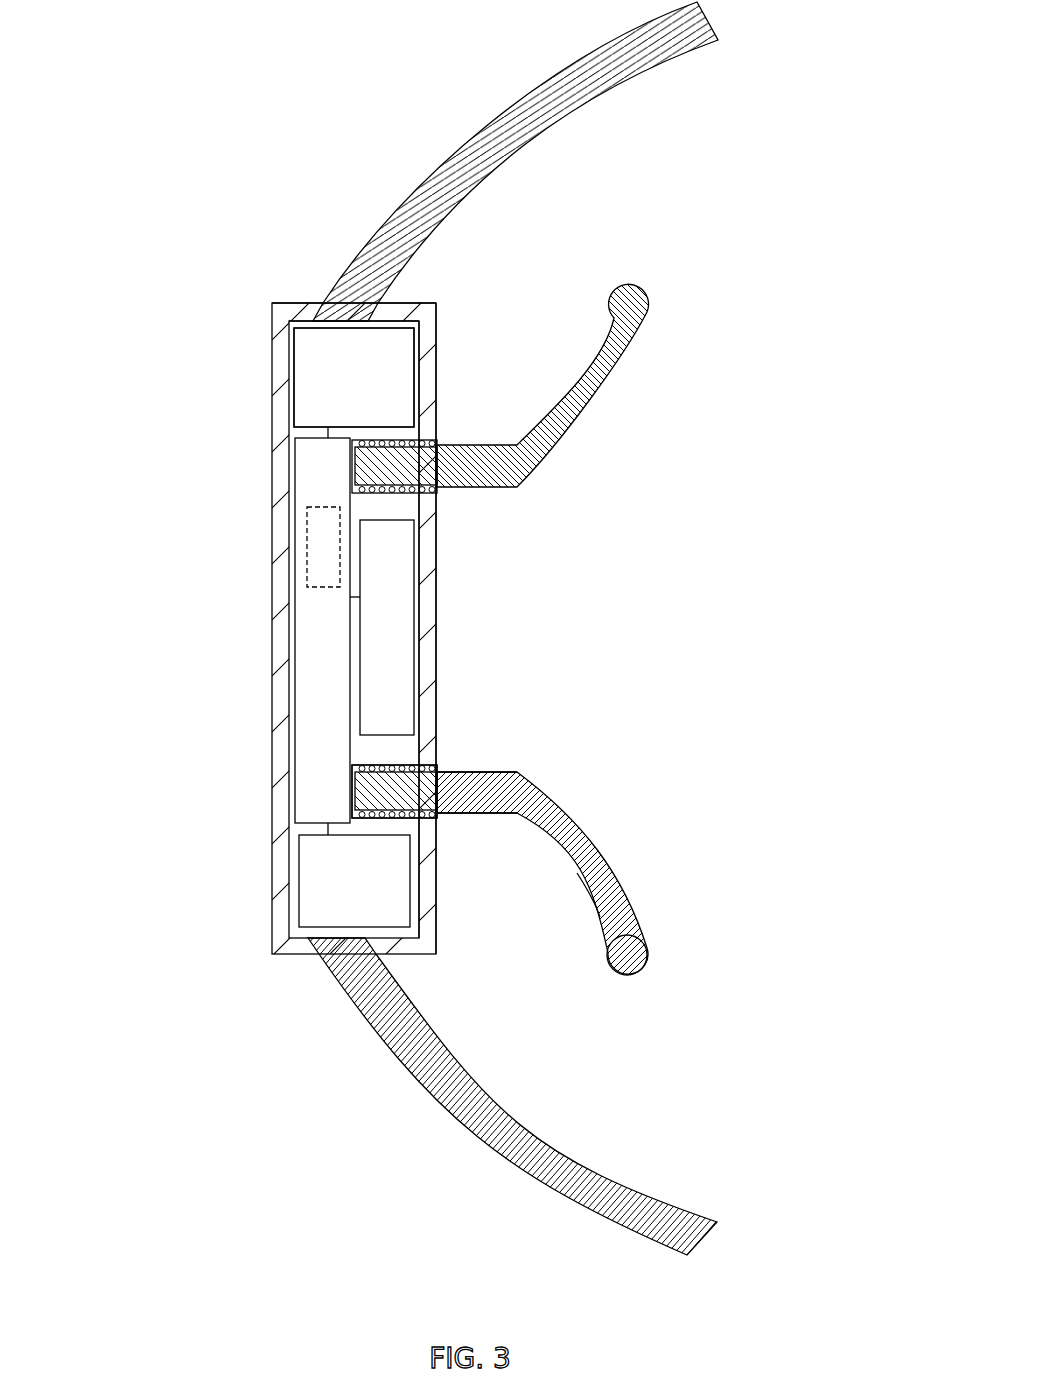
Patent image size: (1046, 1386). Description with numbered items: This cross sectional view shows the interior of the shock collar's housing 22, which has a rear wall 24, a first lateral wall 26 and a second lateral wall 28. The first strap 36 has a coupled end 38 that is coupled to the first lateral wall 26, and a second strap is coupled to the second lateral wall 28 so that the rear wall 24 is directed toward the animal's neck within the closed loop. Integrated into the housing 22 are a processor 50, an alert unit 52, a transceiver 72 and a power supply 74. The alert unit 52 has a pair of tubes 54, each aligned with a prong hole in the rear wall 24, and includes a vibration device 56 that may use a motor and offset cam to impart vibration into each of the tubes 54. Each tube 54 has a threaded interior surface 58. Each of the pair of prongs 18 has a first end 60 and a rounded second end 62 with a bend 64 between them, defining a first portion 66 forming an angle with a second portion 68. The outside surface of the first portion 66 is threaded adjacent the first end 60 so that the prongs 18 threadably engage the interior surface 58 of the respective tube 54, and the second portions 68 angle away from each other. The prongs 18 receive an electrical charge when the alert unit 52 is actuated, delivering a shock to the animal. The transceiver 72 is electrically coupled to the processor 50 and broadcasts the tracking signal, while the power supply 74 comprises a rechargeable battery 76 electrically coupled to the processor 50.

The prongs 18 is at (618, 447).
The housing 22 is at (238, 358).
The rear wall 24 is at (437, 360).
The first lateral wall 26 is at (292, 303).
The second lateral wall 28 is at (307, 955).
The first strap 36 is at (450, 142).
The coupled end 38 is at (343, 325).
The processor 50 is at (313, 398).
The alert unit 52 is at (310, 670).
The tubes 54 is at (400, 493).
The vibration device 56 is at (306, 531).
The interior surface 58 is at (475, 774).
The first end 60 is at (353, 783).
The second end 62 is at (638, 972).
The bend 64 is at (512, 840).
The first portion 66 is at (457, 838).
The second portion 68 is at (572, 928).
The transceiver 72 is at (313, 880).
The power supply 74 is at (440, 613).
The rechargeable battery 76 is at (407, 662).